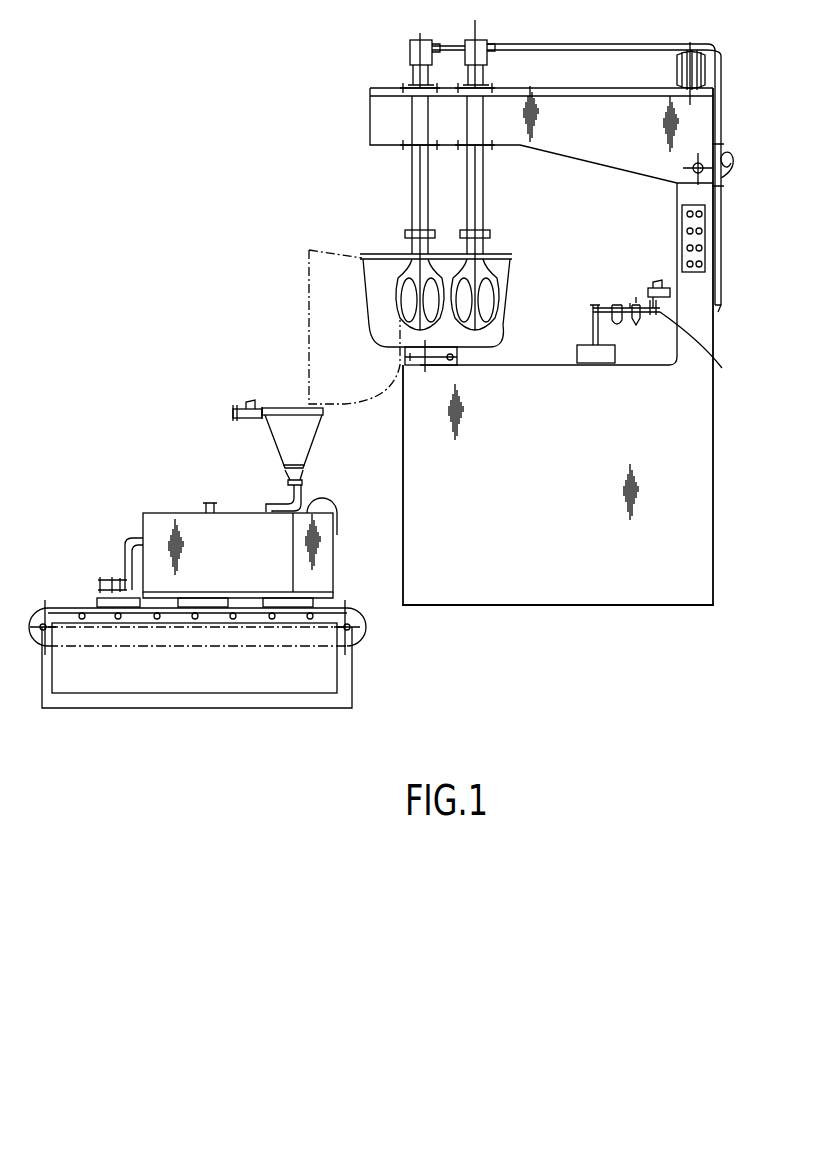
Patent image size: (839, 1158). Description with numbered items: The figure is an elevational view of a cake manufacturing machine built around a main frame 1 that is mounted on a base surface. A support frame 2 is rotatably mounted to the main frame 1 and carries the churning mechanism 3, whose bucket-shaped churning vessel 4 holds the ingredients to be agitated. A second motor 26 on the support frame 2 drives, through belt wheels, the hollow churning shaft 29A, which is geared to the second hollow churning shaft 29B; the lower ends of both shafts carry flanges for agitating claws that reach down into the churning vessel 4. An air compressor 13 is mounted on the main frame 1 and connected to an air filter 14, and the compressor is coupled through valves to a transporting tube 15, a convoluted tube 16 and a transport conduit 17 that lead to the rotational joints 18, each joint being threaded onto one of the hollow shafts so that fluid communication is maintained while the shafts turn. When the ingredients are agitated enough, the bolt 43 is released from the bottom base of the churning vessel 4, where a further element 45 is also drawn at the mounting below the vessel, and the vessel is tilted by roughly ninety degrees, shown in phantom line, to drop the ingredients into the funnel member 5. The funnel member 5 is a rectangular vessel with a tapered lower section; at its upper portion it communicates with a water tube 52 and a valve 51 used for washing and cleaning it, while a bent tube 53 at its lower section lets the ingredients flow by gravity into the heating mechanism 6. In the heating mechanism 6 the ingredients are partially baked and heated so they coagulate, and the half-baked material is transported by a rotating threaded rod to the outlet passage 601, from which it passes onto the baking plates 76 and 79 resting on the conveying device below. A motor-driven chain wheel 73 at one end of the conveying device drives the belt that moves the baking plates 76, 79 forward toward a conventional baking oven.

The main frame 1 is at (690, 473).
The support frame 2 is at (660, 125).
The churning mechanism 3 is at (392, 262).
The churning vessel 4 is at (500, 320).
The funnel member 5 is at (305, 445).
The heating mechanism 6 is at (186, 510).
The air compressor 13 is at (585, 357).
The air filter 14 is at (620, 330).
The transporting tube 15 is at (722, 368).
The convoluted tube 16 is at (733, 158).
The transporting tube 17 is at (632, 44).
The rotational joint 18 is at (410, 47).
The second motor 26 is at (692, 48).
The hollow churning shaft 29A is at (483, 184).
The hollow churning shaft 29B is at (412, 184).
The bolt 43 is at (462, 354).
The pin 45 is at (453, 358).
The valve 51 is at (672, 293).
The water tube 52 is at (233, 413).
The bent tube 53 is at (270, 503).
The outlet passage 601 is at (128, 560).
The chain wheel 73 is at (342, 686).
The baking plate 76 is at (207, 612).
The baking plate 79 is at (98, 604).